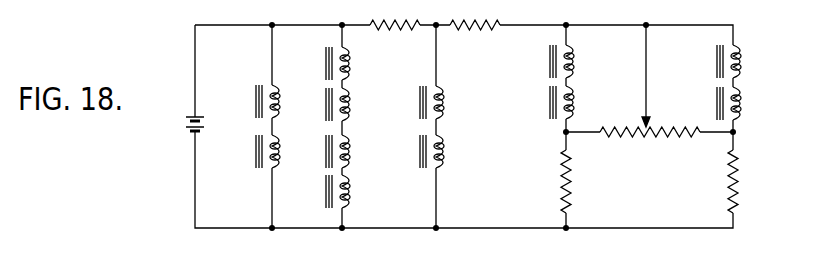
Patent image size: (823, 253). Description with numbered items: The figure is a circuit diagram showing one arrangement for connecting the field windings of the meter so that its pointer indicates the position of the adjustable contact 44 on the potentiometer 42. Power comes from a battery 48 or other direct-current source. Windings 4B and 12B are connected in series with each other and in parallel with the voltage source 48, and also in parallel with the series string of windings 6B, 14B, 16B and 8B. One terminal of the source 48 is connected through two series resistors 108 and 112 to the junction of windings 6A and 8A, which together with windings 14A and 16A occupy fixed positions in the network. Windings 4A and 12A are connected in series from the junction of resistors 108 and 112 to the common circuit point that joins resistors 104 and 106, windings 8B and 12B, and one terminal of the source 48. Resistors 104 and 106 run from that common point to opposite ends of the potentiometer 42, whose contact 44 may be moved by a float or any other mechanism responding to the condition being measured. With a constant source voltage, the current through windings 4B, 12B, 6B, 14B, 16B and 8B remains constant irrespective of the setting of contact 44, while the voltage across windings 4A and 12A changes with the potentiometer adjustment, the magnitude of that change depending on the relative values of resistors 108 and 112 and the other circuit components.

The battery 48 is at (203, 126).
The winding 4B is at (279, 103).
The winding 12B is at (279, 152).
The winding 6B is at (349, 66).
The winding 14B is at (349, 104).
The winding 16B is at (349, 150).
The winding 8B is at (349, 190).
The resistor 108 is at (377, 30).
The resistor 112 is at (477, 30).
The winding 4A is at (443, 103).
The winding 12A is at (443, 153).
The winding 6A is at (573, 60).
The winding 14A is at (573, 102).
The winding 8A is at (740, 60).
The winding 16A is at (740, 102).
The potentiometer 42 is at (636, 140).
The adjustable contact 44 is at (649, 125).
The resistor 104 is at (572, 181).
The resistor 106 is at (727, 181).